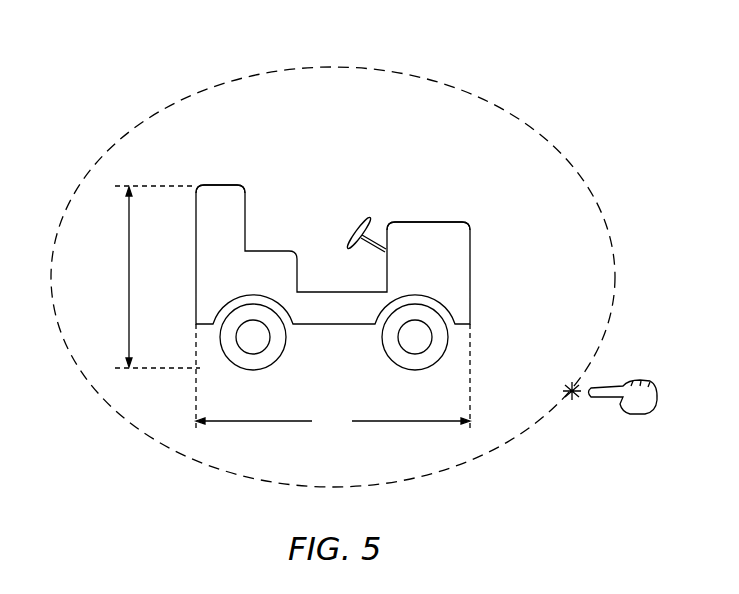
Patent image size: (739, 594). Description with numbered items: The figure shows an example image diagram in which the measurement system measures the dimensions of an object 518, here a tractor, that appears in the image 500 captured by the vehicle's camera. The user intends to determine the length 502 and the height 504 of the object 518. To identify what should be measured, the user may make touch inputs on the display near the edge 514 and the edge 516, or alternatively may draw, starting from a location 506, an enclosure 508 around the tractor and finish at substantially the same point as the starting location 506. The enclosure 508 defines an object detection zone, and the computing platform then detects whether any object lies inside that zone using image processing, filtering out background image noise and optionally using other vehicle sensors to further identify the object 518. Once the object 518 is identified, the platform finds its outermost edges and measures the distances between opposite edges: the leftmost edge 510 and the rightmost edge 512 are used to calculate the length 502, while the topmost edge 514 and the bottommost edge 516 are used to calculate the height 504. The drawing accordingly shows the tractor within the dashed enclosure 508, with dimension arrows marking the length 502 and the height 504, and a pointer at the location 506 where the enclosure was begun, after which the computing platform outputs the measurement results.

The image 500 is at (554, 503).
The length 502 is at (333, 390).
The height 504 is at (148, 277).
The location 506 is at (576, 396).
The enclosure 508 is at (545, 140).
The leftmost edge 510 is at (196, 226).
The rightmost edge 512 is at (472, 258).
The topmost edge 514 is at (233, 185).
The bottommost edge 516 is at (252, 370).
The object 518 is at (442, 262).